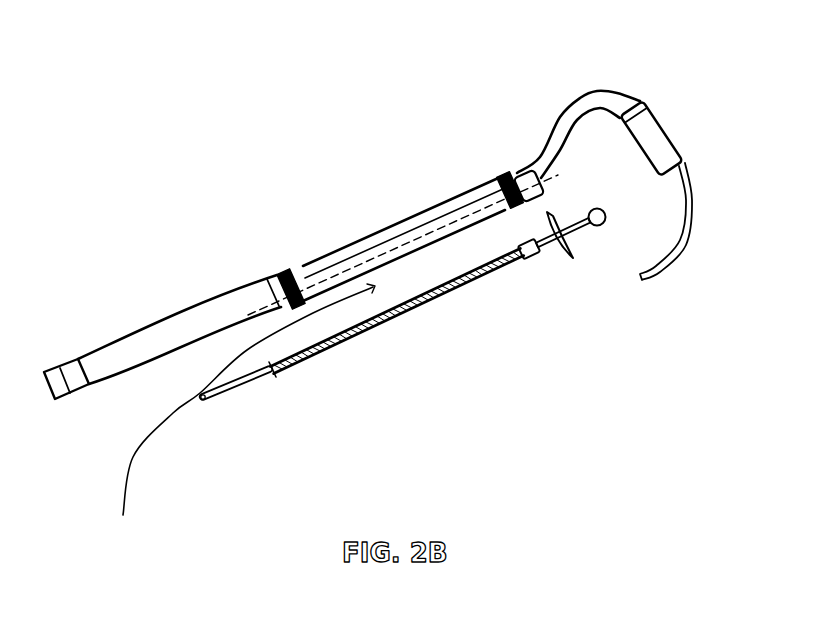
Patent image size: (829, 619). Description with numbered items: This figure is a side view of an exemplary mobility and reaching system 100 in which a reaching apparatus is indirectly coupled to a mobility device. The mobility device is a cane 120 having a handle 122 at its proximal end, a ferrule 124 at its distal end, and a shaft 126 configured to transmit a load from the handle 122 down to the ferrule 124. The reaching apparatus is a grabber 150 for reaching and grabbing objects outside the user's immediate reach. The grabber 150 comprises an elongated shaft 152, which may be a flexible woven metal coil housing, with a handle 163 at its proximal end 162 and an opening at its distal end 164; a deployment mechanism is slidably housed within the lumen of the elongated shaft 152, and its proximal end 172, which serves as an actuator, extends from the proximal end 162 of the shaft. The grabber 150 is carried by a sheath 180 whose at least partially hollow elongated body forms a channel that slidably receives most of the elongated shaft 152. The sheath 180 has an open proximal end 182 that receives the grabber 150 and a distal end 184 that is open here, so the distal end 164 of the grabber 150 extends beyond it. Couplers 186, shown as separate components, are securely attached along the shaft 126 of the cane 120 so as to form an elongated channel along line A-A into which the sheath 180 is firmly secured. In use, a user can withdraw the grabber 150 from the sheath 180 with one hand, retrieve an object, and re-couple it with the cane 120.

The mobility and reaching system 100 is at (113, 125).
The cane 120 is at (159, 345).
The handle 122 is at (660, 143).
The ferrule 124 is at (72, 398).
The shaft 126 is at (440, 212).
The grabber 150 is at (445, 331).
The elongated shaft 152 is at (447, 287).
The proximal end 162 is at (605, 248).
The handle 163 is at (605, 212).
The distal end 164 is at (257, 381).
The proximal end 172 is at (560, 254).
The sheath 180 is at (239, 443).
The proximal end 182 is at (534, 196).
The distal end 184 is at (344, 278).
The couplers 186 is at (283, 271).